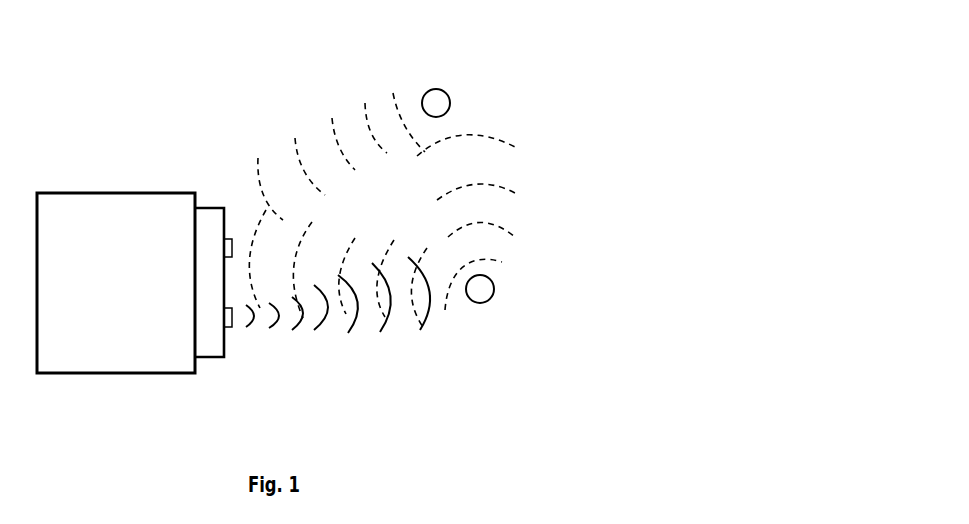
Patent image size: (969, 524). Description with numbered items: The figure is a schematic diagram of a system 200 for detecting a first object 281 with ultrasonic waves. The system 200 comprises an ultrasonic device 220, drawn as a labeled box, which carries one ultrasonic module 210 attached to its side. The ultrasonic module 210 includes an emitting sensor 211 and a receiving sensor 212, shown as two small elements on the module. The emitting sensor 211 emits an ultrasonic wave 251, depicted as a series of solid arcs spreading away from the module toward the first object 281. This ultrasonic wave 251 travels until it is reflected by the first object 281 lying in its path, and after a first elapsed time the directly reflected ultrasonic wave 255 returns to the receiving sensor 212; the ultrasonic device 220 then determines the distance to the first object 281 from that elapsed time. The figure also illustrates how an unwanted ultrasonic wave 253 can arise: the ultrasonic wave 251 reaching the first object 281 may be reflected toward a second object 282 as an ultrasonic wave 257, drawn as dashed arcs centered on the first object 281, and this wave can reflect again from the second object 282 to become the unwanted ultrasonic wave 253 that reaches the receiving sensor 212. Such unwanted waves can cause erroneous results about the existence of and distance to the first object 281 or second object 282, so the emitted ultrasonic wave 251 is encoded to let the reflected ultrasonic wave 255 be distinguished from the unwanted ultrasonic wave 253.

The system 200 is at (762, 26).
The ultrasonic module 210 is at (213, 358).
The emitting sensor 211 is at (228, 330).
The receiving sensor 212 is at (230, 226).
The ultrasonic device 220 is at (116, 283).
The ultrasonic wave 251 is at (365, 329).
The unwanted ultrasonic wave 253 is at (284, 125).
The reflected ultrasonic wave 255 is at (337, 238).
The ultrasonic wave 257 is at (510, 181).
The first object 281 is at (494, 289).
The second object 282 is at (452, 102).